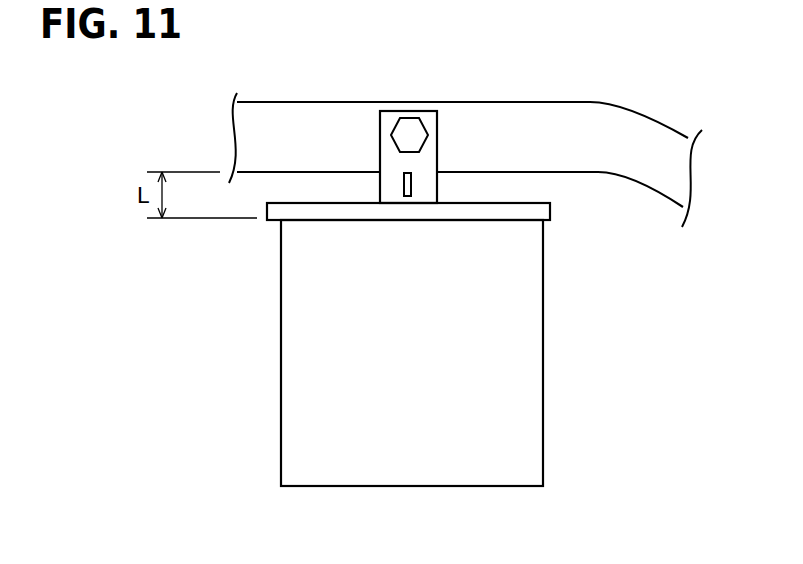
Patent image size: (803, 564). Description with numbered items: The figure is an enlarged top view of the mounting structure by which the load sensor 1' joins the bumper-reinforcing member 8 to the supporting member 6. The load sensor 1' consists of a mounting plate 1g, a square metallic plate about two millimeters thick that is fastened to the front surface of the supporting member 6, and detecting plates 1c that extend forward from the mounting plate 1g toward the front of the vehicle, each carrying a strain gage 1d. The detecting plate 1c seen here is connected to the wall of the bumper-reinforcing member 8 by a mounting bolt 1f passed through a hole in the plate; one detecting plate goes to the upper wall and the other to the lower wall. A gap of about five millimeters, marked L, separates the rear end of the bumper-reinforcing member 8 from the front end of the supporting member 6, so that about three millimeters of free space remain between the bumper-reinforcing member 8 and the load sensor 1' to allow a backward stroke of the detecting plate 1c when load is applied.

The bumper-reinforcing member 8 is at (466, 102).
The detecting plate 1c is at (432, 152).
The mounting bolt 1f is at (408, 126).
The strain gage 1d is at (403, 190).
The mounting plate 1g is at (550, 212).
The load sensor 1' is at (529, 242).
The supporting member 6 is at (543, 402).